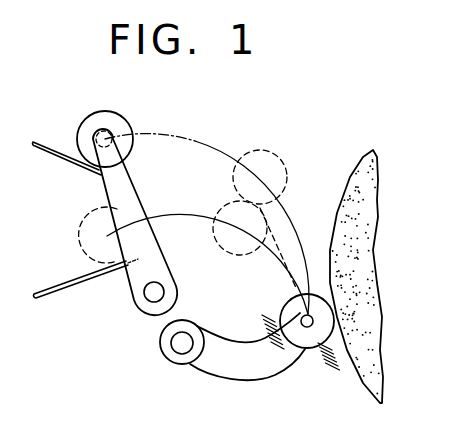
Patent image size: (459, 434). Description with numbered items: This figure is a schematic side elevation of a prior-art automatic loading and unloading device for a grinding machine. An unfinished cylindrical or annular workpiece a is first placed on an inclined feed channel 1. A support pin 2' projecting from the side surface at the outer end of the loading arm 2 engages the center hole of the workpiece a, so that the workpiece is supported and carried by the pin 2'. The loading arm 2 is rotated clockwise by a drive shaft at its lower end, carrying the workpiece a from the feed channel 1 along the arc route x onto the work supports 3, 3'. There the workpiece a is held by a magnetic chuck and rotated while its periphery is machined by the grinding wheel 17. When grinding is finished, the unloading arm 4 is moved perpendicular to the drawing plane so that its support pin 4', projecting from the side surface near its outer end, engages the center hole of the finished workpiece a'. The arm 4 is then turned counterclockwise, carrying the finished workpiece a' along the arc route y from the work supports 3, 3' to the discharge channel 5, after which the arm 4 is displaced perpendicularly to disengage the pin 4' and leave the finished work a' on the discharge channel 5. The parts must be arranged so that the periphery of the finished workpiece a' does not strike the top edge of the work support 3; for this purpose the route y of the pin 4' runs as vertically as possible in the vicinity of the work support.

The inclined feed channel 1 is at (53, 159).
The loading arm 2 is at (135, 222).
The support pin 2' is at (123, 132).
The work support 3 is at (265, 316).
The work support 3' is at (334, 378).
The unloading arm 4 is at (232, 367).
The support pin 4' is at (309, 361).
The discharge channel 5 is at (67, 286).
The grinding wheel 17 is at (356, 174).
The workpiece a is at (116, 110).
The finished workpiece a' is at (295, 305).
The arc route x is at (210, 142).
The arc route y is at (184, 217).